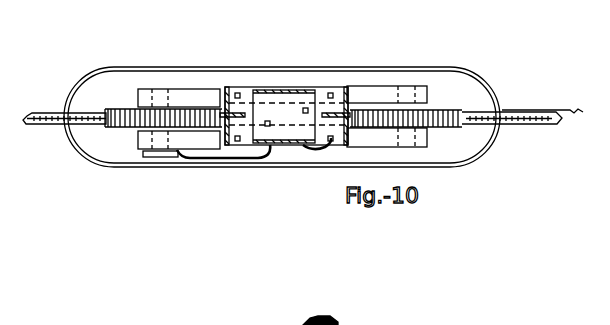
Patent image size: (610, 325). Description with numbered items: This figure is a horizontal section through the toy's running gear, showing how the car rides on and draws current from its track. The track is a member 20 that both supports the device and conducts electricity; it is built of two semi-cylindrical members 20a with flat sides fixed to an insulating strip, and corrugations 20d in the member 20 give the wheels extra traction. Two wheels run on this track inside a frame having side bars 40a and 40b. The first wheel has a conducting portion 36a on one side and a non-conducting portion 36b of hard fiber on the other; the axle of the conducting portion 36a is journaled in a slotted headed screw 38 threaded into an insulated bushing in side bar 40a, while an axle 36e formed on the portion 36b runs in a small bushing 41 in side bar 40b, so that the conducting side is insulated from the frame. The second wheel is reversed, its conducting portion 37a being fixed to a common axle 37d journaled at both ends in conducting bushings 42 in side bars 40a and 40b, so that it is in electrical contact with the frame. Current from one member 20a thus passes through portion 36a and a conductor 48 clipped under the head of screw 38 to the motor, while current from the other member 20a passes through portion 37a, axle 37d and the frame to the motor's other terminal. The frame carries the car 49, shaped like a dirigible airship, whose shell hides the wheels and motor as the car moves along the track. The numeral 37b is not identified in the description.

The member 20 is at (521, 137).
The members 20a is at (40, 113).
The corrugations 20d is at (557, 110).
The portion 36a is at (108, 128).
The portion 36b is at (108, 112).
The axle 36e is at (160, 88).
The conducting portion 37a is at (450, 112).
The lower block 37b is at (438, 124).
The common axle 37d is at (412, 86).
The headed screw 38 is at (148, 159).
The side bar 40a is at (140, 136).
The side bar 40b is at (197, 88).
The small bushing 41 is at (140, 88).
The bushings 42 is at (392, 86).
The conductor 48 is at (205, 160).
The car 49 is at (277, 165).